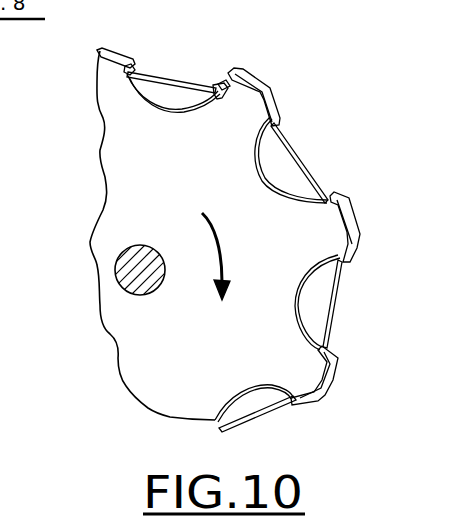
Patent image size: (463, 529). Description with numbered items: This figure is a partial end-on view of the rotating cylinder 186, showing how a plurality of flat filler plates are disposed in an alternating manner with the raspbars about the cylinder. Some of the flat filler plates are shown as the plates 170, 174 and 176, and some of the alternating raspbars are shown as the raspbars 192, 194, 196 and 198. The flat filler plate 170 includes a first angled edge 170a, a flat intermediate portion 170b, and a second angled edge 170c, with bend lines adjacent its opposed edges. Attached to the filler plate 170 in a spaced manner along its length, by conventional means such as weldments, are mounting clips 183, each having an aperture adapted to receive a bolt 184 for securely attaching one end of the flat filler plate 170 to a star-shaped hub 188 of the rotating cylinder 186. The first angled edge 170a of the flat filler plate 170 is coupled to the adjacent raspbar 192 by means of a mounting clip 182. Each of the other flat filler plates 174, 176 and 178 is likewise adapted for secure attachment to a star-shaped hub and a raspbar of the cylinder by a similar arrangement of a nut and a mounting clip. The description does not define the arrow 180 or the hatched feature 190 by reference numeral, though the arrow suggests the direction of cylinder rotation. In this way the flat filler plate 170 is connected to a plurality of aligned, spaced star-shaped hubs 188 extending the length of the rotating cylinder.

The flat filler plate 170 is at (198, 52).
The first angled edge 170a is at (132, 65).
The flat intermediate portion 170b is at (158, 88).
The second angled edge 170c is at (220, 98).
The flat filler plate 174 is at (300, 158).
The flat filler plate 176 is at (333, 299).
The flat filler plate 178 is at (258, 412).
The rotation direction arrow 180 is at (222, 246).
The mounting clip 182 is at (125, 72).
The mounting clip 183 is at (219, 83).
The bolt 184 is at (228, 78).
The rotating cylinder 186 is at (104, 178).
The star-shaped hub 188 is at (160, 357).
The aperture 190 is at (135, 270).
The raspbar 192 is at (108, 51).
The raspbar 194 is at (268, 84).
The raspbar 196 is at (353, 216).
The raspbar 198 is at (332, 383).